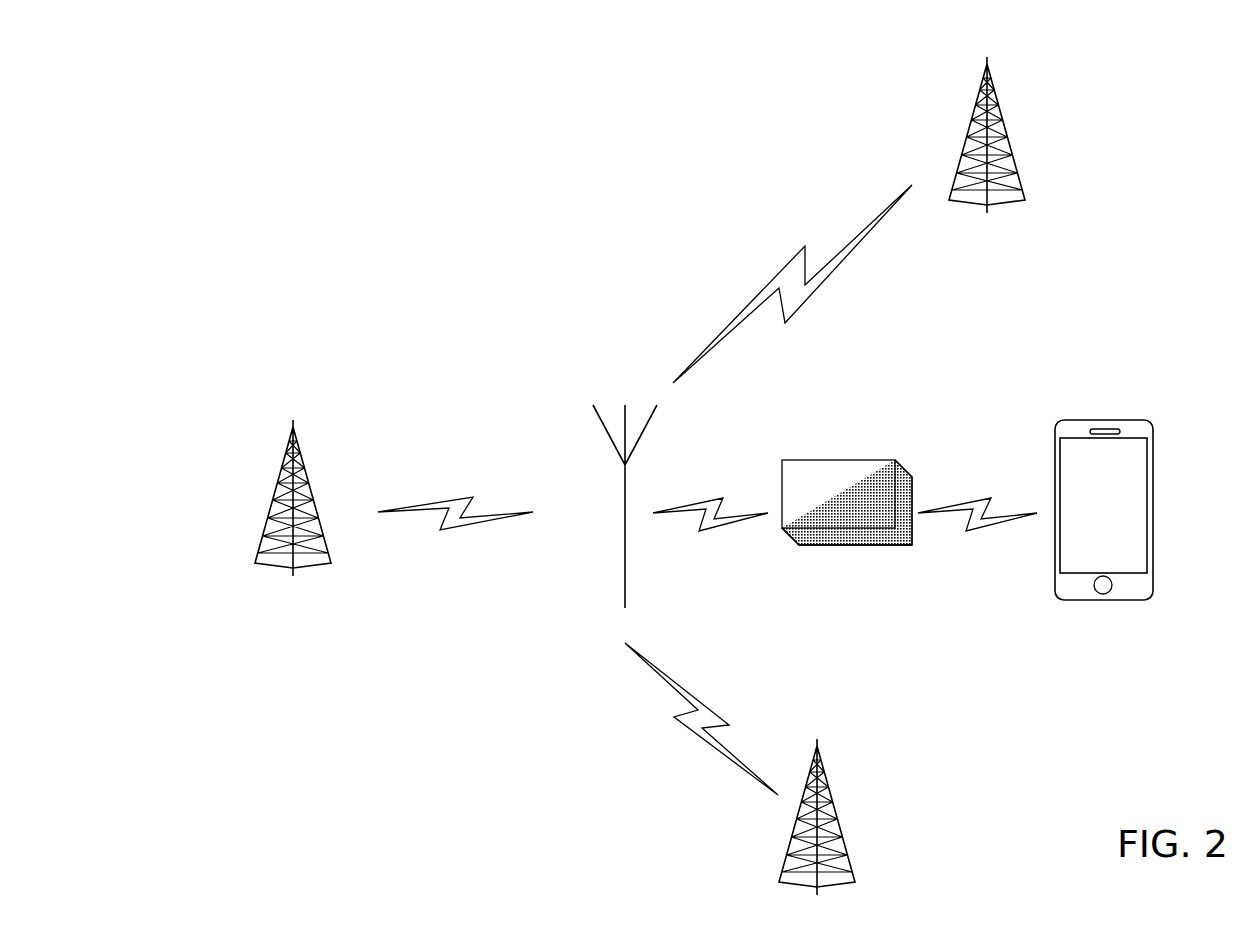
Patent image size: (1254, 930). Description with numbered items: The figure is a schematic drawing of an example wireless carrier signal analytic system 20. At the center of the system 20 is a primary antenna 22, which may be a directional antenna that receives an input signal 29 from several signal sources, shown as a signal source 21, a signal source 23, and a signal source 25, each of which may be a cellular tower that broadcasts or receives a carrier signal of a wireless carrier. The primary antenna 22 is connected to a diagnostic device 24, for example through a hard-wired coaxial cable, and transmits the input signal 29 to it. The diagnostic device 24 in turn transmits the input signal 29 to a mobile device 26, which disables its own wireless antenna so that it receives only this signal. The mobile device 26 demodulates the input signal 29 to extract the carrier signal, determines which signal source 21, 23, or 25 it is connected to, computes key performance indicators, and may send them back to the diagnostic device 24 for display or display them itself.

The wireless carrier signal analytic system 20 is at (502, 222).
The signal source 21 is at (252, 512).
The primary antenna 22 is at (584, 598).
The signal source 23 is at (1005, 145).
The diagnostic device 24 is at (844, 558).
The signal source 25 is at (838, 810).
The mobile device 26 is at (1098, 603).
The input signal 29 is at (448, 500).